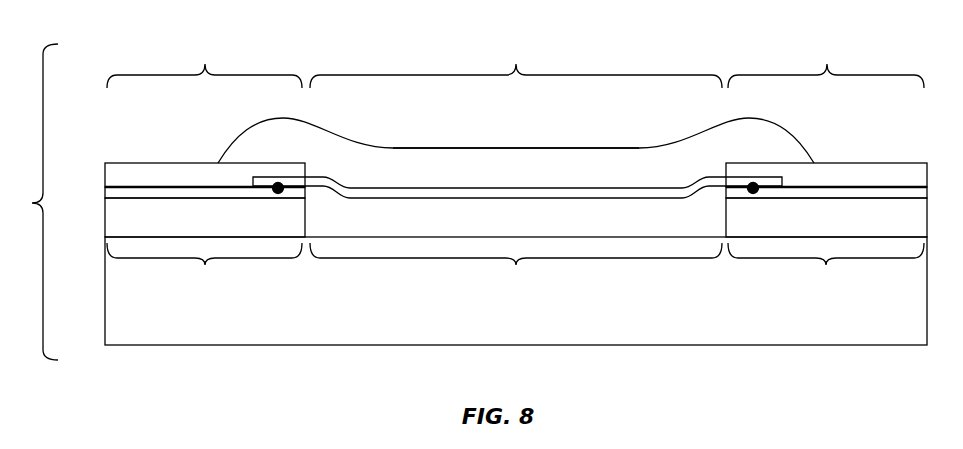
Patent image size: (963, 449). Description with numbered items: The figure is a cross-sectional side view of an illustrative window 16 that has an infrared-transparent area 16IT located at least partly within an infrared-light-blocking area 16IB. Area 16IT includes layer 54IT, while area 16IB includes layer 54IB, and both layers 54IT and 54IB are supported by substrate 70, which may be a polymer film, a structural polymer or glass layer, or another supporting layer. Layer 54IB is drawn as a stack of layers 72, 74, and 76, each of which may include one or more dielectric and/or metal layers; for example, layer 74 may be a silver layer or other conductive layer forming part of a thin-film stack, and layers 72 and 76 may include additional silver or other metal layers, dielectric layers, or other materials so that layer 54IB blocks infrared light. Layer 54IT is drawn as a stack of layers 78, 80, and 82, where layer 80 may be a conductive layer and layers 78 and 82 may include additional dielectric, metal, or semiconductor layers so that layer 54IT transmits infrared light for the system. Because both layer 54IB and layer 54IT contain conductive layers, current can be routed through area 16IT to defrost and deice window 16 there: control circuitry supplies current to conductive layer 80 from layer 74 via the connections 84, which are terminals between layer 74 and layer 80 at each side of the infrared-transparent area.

The window 16 is at (32, 202).
The infrared-light-blocking area 16IB is at (515, 65).
The infrared-transparent area 16IT is at (516, 65).
The infrared-light-blocking layer 54IB is at (515, 265).
The infrared-transmitting layer 54IT is at (516, 265).
The substrate 70 is at (156, 338).
The layer 72 is at (108, 218).
The conductive layer 74 is at (107, 194).
The layer 76 is at (107, 175).
The layer 78 is at (422, 212).
The conductive layer 80 is at (543, 195).
The layer 82 is at (483, 158).
The connections 84 is at (278, 184).